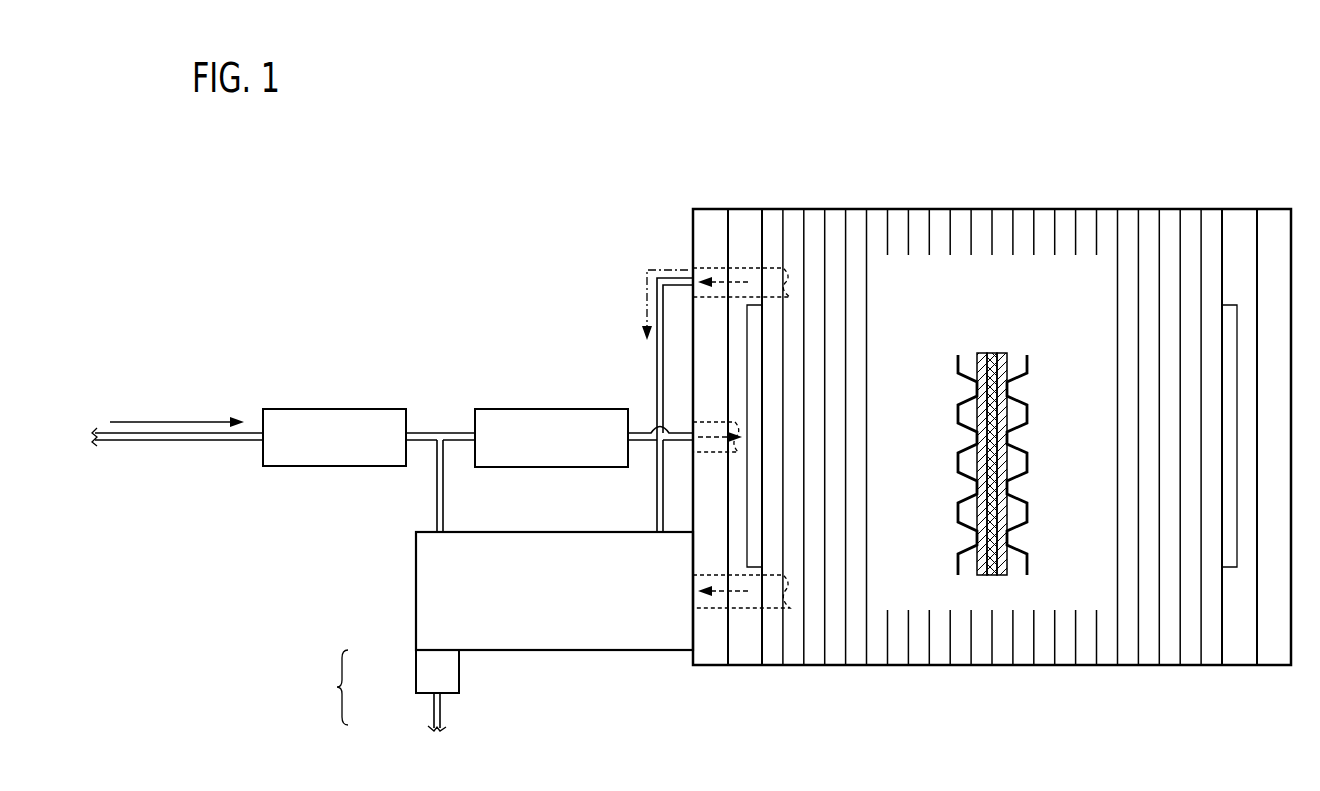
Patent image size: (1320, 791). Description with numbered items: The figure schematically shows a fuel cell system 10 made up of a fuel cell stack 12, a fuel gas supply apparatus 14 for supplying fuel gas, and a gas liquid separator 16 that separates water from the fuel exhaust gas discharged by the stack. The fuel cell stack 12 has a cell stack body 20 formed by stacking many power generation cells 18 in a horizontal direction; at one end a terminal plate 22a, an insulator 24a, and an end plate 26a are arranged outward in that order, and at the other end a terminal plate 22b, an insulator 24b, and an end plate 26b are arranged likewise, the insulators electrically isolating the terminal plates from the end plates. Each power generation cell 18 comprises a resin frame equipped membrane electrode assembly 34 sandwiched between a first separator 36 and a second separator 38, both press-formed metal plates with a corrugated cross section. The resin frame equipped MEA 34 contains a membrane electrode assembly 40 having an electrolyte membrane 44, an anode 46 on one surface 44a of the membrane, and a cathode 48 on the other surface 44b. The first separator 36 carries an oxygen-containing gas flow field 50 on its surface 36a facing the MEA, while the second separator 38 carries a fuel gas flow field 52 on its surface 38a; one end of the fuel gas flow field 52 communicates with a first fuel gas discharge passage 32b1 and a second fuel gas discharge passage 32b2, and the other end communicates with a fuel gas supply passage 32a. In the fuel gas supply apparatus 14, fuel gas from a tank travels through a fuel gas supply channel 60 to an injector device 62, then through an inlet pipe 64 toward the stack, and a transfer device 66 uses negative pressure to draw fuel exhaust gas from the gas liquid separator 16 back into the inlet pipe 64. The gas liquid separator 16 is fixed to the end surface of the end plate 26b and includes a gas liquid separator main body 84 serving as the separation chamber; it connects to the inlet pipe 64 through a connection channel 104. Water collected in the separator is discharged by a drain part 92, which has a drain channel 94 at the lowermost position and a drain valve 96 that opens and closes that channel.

The fuel cell system 10 is at (250, 187).
The fuel cell stack 12 is at (1268, 152).
The fuel gas supply apparatus 14 is at (298, 341).
The gas liquid separator 16 is at (402, 550).
The power generation cell 18 is at (838, 218).
The cell stack body 20 is at (808, 206).
The terminal plate 22a is at (1231, 568).
The terminal plate 22b is at (747, 392).
The insulator 24a is at (1232, 214).
The insulator 24b is at (750, 214).
The end plate 26a is at (1277, 214).
The end plate 26b is at (708, 214).
The fuel gas supply passage 32a is at (715, 455).
The first fuel gas discharge passage 32b1 is at (700, 268).
The second fuel gas discharge passage 32b2 is at (712, 609).
The resin frame equipped membrane electrode assembly 34 is at (1038, 360).
The first separator 36 is at (957, 410).
The surface of first separator 36a is at (967, 502).
The second separator 38 is at (1028, 410).
The surface of second separator 38a is at (1019, 502).
The membrane electrode assembly 40 is at (1040, 302).
The electrolyte membrane 44 is at (992, 352).
The one surface of electrolyte membrane 44a is at (1003, 535).
The other surface of electrolyte membrane 44b is at (984, 531).
The anode 46 is at (1006, 362).
The cathode 48 is at (978, 362).
The oxygen-containing gas flow field 50 is at (966, 462).
The fuel gas flow field 52 is at (1018, 462).
The fuel gas supply channel 60 is at (143, 442).
The injector device 62 is at (293, 408).
The inlet pipe 64 is at (443, 432).
The transfer device 66 is at (505, 408).
The gas liquid separator main body 84 is at (526, 652).
The drain part 92 is at (330, 687).
The drain channel 94 is at (432, 705).
The drain valve 96 is at (416, 667).
The connection channel 104 is at (436, 489).